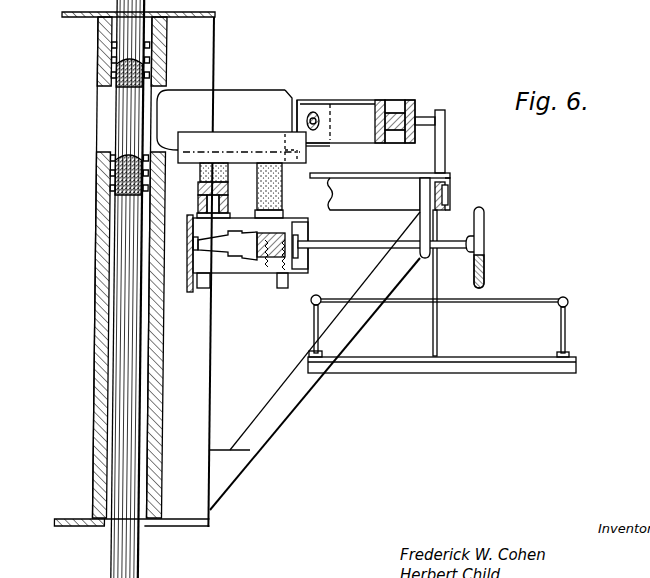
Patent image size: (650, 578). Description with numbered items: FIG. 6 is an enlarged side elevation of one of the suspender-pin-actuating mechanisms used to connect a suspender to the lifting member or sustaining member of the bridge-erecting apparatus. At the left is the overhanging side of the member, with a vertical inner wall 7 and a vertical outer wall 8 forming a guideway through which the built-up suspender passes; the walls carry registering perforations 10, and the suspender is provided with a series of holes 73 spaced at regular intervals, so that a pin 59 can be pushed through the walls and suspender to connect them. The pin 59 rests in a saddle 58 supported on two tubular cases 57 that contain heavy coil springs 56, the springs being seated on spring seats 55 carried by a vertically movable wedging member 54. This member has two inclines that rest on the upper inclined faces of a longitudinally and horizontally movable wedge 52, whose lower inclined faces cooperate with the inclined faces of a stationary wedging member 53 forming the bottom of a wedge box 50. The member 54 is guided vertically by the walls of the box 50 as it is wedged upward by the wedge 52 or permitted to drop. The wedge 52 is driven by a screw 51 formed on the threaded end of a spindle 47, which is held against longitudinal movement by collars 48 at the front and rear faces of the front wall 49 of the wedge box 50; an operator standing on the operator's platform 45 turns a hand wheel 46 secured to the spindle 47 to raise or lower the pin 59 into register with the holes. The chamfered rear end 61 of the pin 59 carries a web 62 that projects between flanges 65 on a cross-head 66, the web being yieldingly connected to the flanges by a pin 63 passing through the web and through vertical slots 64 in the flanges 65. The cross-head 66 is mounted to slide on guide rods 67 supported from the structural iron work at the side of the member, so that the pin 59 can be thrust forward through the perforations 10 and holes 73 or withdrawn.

The vertical inner wall 7 is at (92, 343).
The vertical outer wall 8 is at (160, 342).
The registering perforations 10 is at (100, 127).
The holes 73 is at (126, 107).
The pin 59 is at (248, 92).
The chamfered rear end 61 is at (297, 99).
The web 62 is at (330, 102).
The pin 63 is at (320, 120).
The vertical slots 64 is at (322, 128).
The flanges 65 is at (352, 101).
The cross-head 66 is at (410, 101).
The guide rods 67 is at (432, 118).
The saddle 58 is at (304, 158).
The coil springs 56 is at (206, 186).
The tubular cases 57 is at (262, 187).
The spring seats 55 is at (200, 208).
The vertically movable wedging member 54 is at (246, 214).
The front wall 49 is at (322, 199).
The collars 48 is at (306, 234).
The wedge box 50 is at (286, 257).
The screw 51 is at (270, 262).
The movable wedge 52 is at (250, 258).
The stationary wedging member 53 is at (292, 255).
The spindle 47 is at (478, 240).
The hand wheel 46 is at (486, 270).
The operator's platform 45 is at (490, 364).